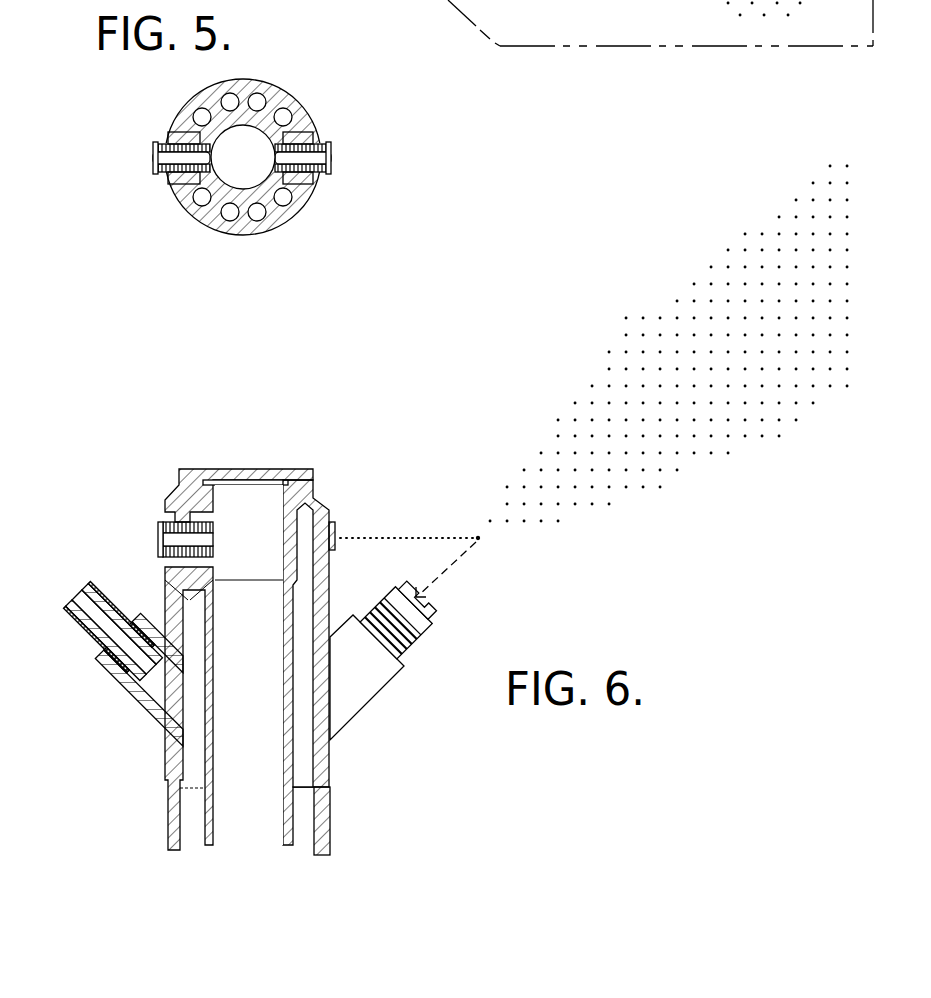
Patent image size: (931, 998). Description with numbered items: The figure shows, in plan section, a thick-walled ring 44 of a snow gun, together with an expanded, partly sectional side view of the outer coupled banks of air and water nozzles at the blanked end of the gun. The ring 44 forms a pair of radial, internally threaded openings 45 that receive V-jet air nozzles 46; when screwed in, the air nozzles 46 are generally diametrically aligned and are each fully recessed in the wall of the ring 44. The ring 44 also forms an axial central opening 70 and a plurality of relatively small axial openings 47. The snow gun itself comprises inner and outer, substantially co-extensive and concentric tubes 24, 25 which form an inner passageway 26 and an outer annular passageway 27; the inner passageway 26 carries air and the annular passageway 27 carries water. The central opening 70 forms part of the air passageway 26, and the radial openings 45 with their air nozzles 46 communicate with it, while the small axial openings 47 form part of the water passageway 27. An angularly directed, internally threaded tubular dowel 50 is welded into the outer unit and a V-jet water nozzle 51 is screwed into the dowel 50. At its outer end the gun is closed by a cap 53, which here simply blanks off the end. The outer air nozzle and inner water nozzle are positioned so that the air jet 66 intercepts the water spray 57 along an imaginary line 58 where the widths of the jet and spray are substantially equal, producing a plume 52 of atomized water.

In FIG. 6, the inner tube 24 is at (307, 743).
In FIG. 6, the outer tube 25 is at (330, 813).
In FIG. 6, the inner passageway 26 is at (268, 681).
In FIG. 6, the outer annular passageway 27 is at (193, 750).
In FIG. 5, the thick-walled ring 44 is at (240, 235).
In FIG. 6, the thick-walled ring 44 is at (325, 496).
In FIG. 5, the radial internally threaded opening 45 is at (303, 195).
In FIG. 5, the V-jet air nozzle 46 is at (335, 145).
In FIG. 6, the V-jet air nozzle 46 is at (158, 532).
In FIG. 5, the small axial opening 47 is at (260, 215).
In FIG. 6, the small axial opening 47 is at (305, 548).
In FIG. 6, the tubular dowel 50 is at (129, 694).
In FIG. 6, the V-jet water nozzle 51 is at (77, 627).
In FIG. 6, the plume 52 is at (745, 418).
In FIG. 6, the cap 53 is at (278, 469).
In FIG. 6, the water spray 57 is at (456, 566).
In FIG. 6, the imaginary line 58 is at (480, 539).
In FIG. 6, the air jet 66 is at (410, 530).
In FIG. 5, the axial central opening 70 is at (240, 147).